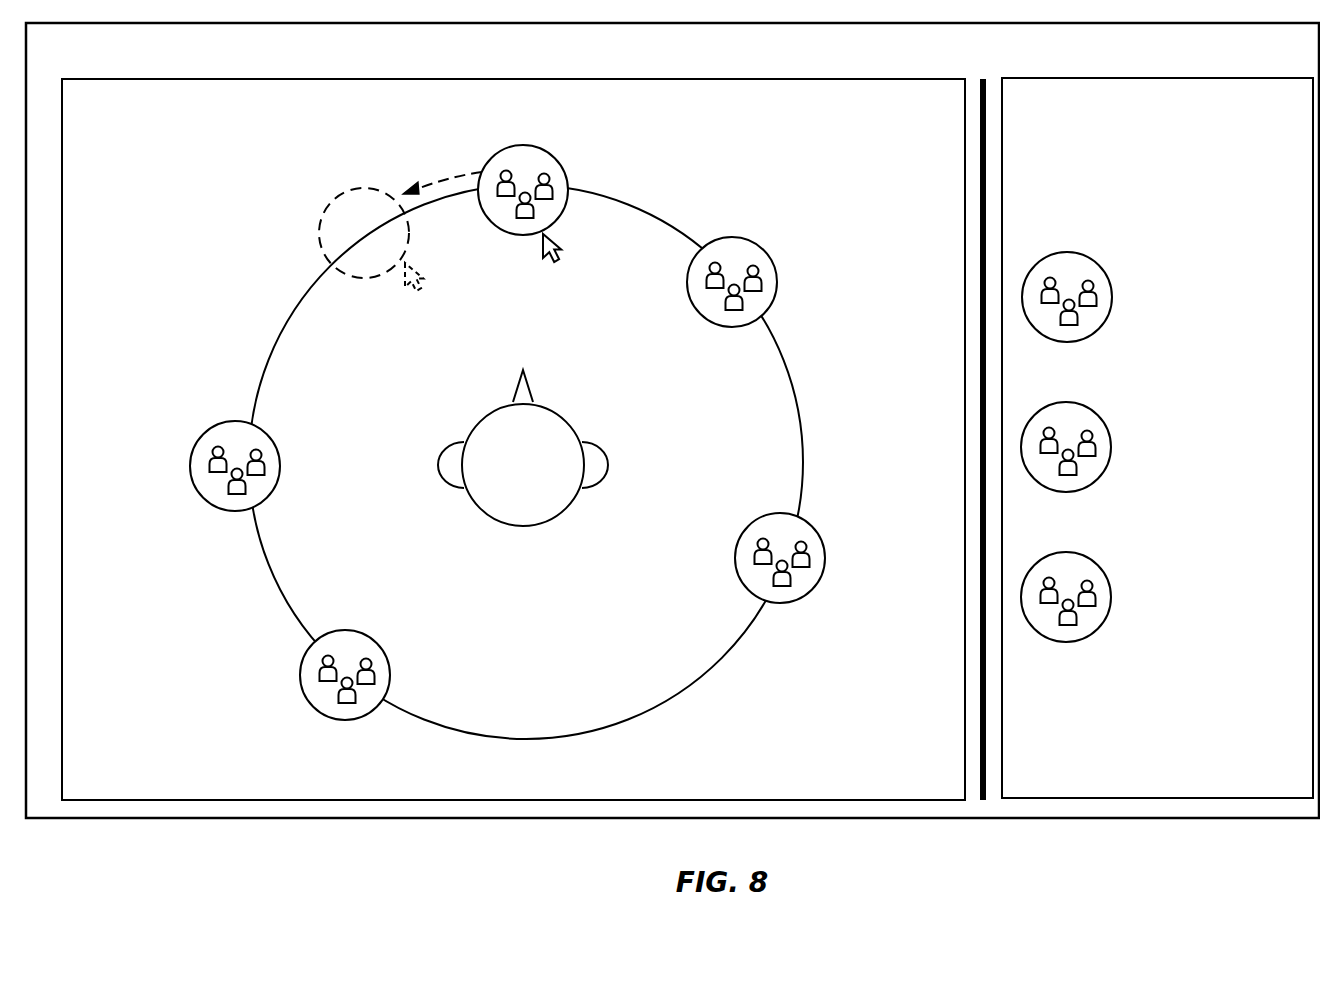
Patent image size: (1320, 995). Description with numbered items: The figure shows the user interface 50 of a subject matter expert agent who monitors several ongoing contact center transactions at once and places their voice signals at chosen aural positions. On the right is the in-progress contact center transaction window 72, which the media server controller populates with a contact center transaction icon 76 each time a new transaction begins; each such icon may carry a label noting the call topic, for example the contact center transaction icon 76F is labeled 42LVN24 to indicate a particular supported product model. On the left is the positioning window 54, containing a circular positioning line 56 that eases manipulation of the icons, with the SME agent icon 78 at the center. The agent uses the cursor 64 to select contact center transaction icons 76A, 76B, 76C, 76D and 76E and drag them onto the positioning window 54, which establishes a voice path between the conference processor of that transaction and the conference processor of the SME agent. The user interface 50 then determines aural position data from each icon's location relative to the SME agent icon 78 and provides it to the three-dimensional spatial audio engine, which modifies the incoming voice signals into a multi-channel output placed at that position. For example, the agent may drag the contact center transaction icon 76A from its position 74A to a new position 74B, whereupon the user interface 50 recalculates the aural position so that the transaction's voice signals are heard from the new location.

The user interface 50 is at (1310, 65).
The positioning window 54 is at (124, 125).
The positioning line 56 is at (300, 293).
The cursor 64 is at (558, 262).
The in-progress contact center transaction window 72 is at (1145, 168).
The position 74A is at (481, 162).
The new position 74B is at (325, 212).
The contact center transaction icon 76 is at (1096, 415).
The contact center transaction icon 76A is at (565, 172).
The contact center transaction icon 76B is at (765, 312).
The contact center transaction icon 76C is at (820, 537).
The contact center transaction icon 76D is at (270, 492).
The contact center transaction 4 icon 76E is at (302, 660).
The contact center transaction icon 76F is at (1097, 265).
The SME agent icon 78 is at (566, 512).